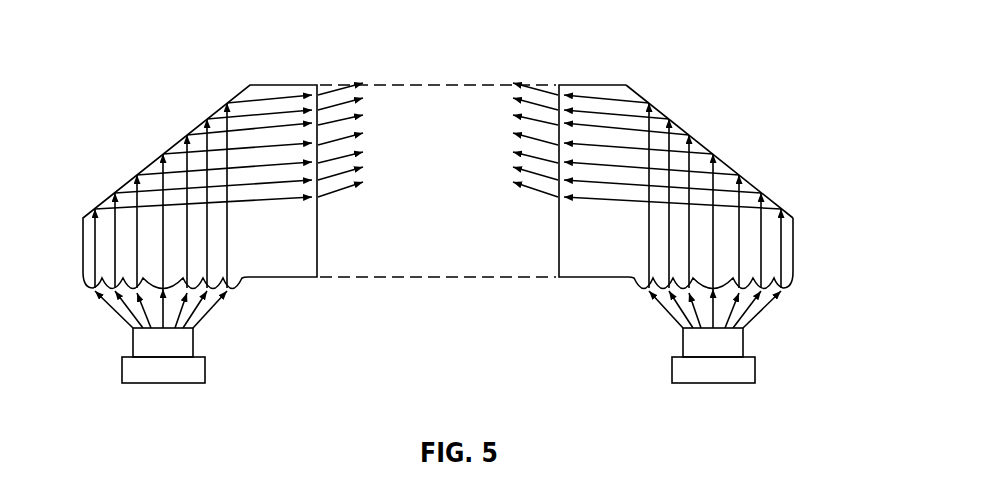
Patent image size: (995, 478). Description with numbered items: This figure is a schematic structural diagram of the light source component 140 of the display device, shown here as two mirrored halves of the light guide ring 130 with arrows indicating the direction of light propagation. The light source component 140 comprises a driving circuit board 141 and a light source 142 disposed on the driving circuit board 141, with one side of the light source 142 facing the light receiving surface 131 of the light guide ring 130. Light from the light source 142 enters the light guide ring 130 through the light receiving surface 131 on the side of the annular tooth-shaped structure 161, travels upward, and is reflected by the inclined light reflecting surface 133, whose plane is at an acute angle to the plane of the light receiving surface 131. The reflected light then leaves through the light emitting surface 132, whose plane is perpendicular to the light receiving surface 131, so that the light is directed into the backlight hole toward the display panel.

The light guide ring 130 is at (703, 251).
The light receiving surface 131 is at (788, 287).
The light emitting surface 132 is at (317, 235).
The light reflecting surface 133 is at (728, 165).
The light source component 140 is at (238, 374).
The driving circuit board 141 is at (163, 370).
The light source 142 is at (170, 340).
The annular tooth-shaped structure 161 is at (157, 278).